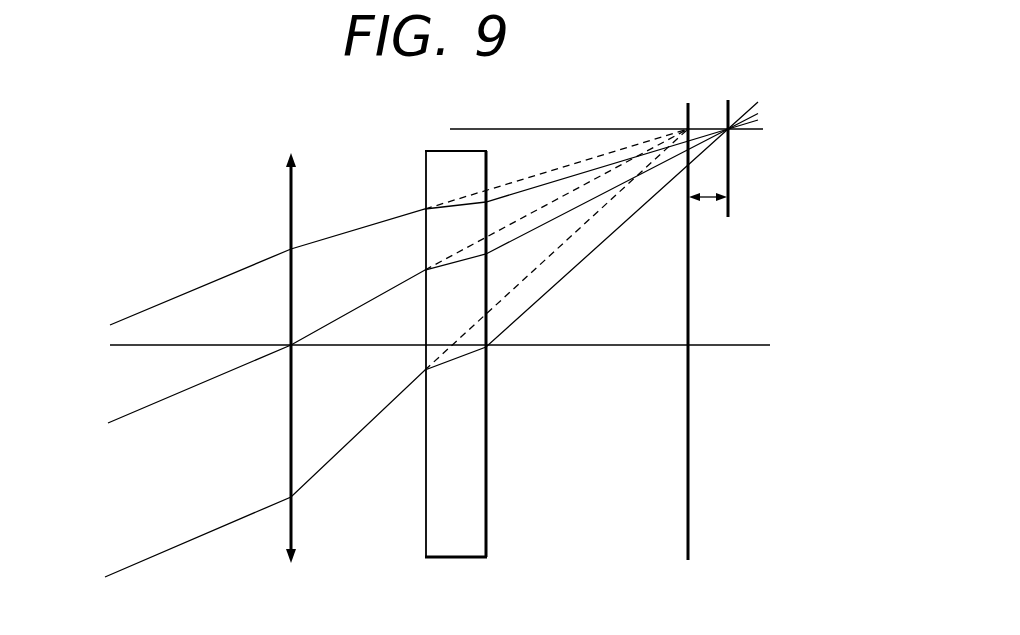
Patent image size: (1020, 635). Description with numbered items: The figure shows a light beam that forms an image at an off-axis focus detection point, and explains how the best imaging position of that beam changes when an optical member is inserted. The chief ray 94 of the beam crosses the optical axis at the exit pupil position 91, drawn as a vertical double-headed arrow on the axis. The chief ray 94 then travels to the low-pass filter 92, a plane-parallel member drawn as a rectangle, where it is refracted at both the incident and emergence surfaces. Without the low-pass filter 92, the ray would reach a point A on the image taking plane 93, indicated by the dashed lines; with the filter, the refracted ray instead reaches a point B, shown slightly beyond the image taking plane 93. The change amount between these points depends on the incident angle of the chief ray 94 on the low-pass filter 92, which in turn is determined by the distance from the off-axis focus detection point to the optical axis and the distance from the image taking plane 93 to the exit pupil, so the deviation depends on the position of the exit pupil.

The exit pupil position 91 is at (295, 540).
The low-pass filter 92 is at (488, 550).
The image taking plane 93 is at (690, 548).
The chief ray 94 is at (127, 419).